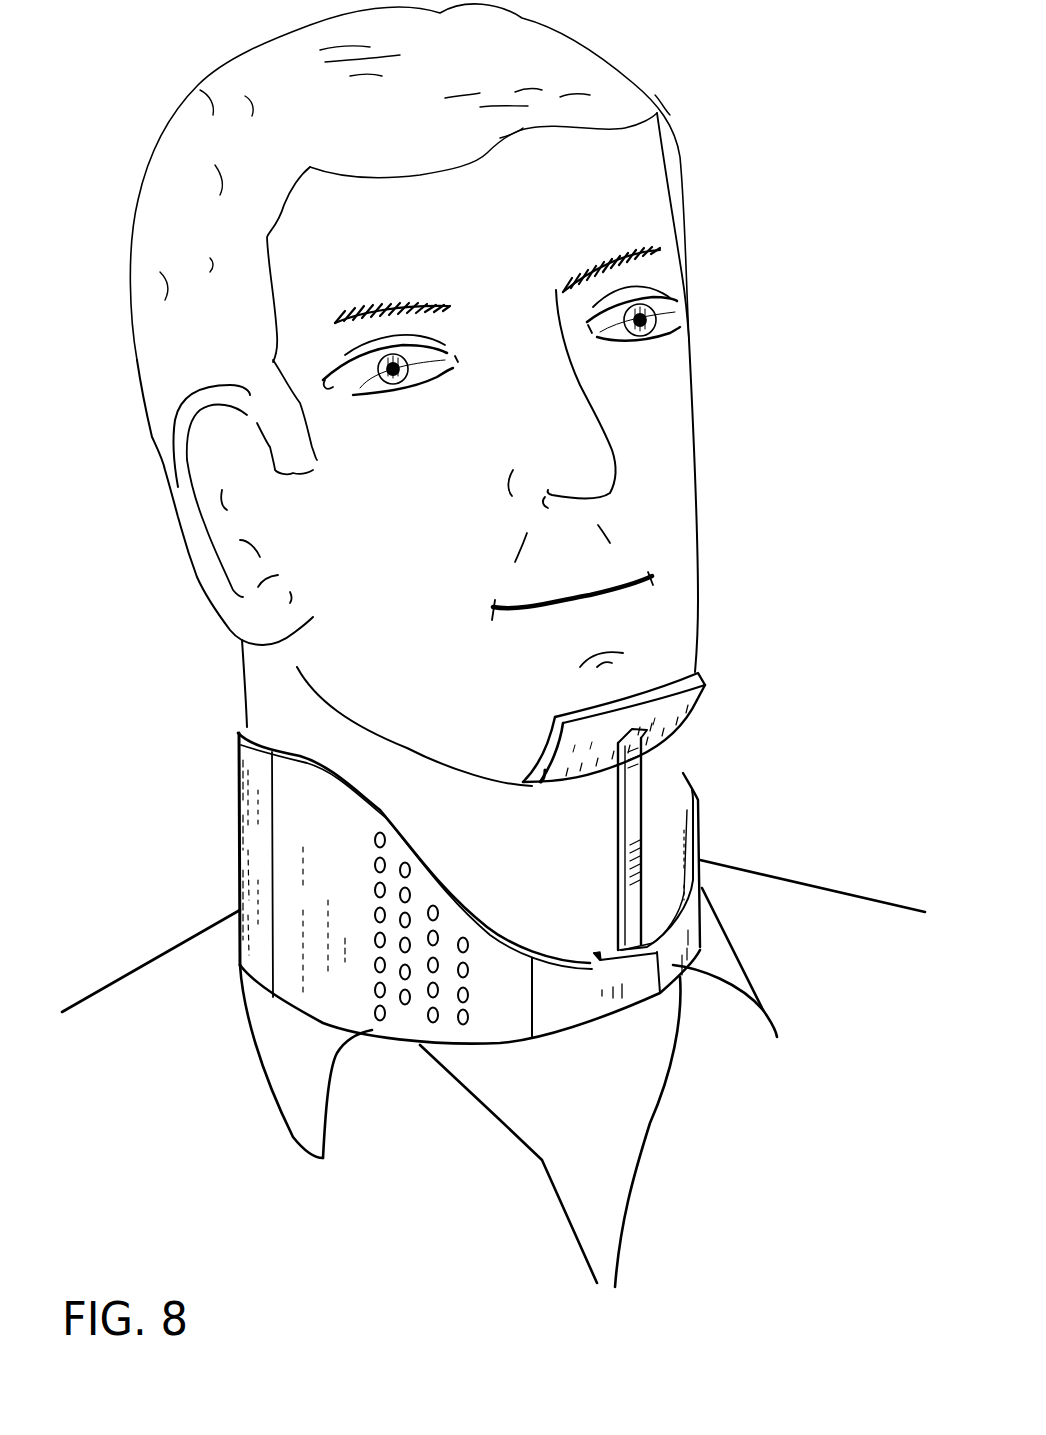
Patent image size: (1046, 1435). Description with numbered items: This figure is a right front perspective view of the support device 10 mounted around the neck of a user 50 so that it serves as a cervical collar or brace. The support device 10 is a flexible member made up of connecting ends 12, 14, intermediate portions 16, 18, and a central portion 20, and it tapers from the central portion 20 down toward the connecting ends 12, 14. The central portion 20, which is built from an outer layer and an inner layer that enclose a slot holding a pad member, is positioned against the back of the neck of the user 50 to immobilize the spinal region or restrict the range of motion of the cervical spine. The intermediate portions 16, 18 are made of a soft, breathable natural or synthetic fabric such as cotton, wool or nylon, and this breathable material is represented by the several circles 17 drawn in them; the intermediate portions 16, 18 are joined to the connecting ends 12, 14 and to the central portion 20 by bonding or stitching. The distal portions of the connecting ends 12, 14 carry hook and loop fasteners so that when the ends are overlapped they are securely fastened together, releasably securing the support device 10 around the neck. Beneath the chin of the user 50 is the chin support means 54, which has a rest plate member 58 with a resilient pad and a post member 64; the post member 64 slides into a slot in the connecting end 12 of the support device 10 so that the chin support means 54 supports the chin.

The support device 10 is at (207, 886).
The connecting end 12 is at (673, 965).
The connecting end 14 is at (580, 1005).
The intermediate portion 16 is at (325, 992).
The circles 17 is at (408, 870).
The intermediate portion 18 is at (701, 860).
The central portion 20 is at (235, 819).
The user 50 is at (685, 388).
The chin support means 54 is at (712, 678).
The rest plate member 58 is at (680, 713).
The post member 64 is at (620, 855).